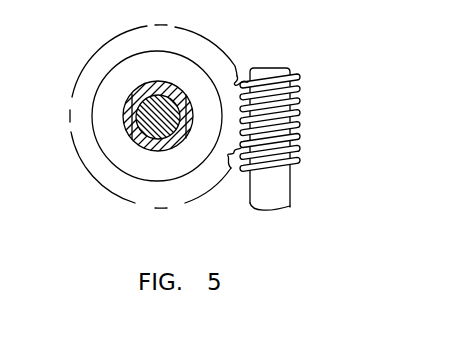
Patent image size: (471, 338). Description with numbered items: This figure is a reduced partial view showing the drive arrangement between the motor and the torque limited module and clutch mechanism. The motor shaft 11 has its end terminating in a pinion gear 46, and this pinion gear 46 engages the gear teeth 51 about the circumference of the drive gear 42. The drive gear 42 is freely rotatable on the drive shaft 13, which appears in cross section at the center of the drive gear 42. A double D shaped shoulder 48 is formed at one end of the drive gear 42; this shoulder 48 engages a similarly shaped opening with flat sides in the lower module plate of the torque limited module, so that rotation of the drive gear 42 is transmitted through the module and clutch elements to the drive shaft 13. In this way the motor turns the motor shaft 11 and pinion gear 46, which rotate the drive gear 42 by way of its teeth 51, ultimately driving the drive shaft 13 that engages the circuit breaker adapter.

The drive gear 42 is at (81, 72).
The shoulder 48 is at (127, 128).
The drive shaft 13 is at (152, 149).
The gear teeth 51 is at (246, 72).
The pinion gear 46 is at (302, 123).
The motor shaft 11 is at (290, 185).